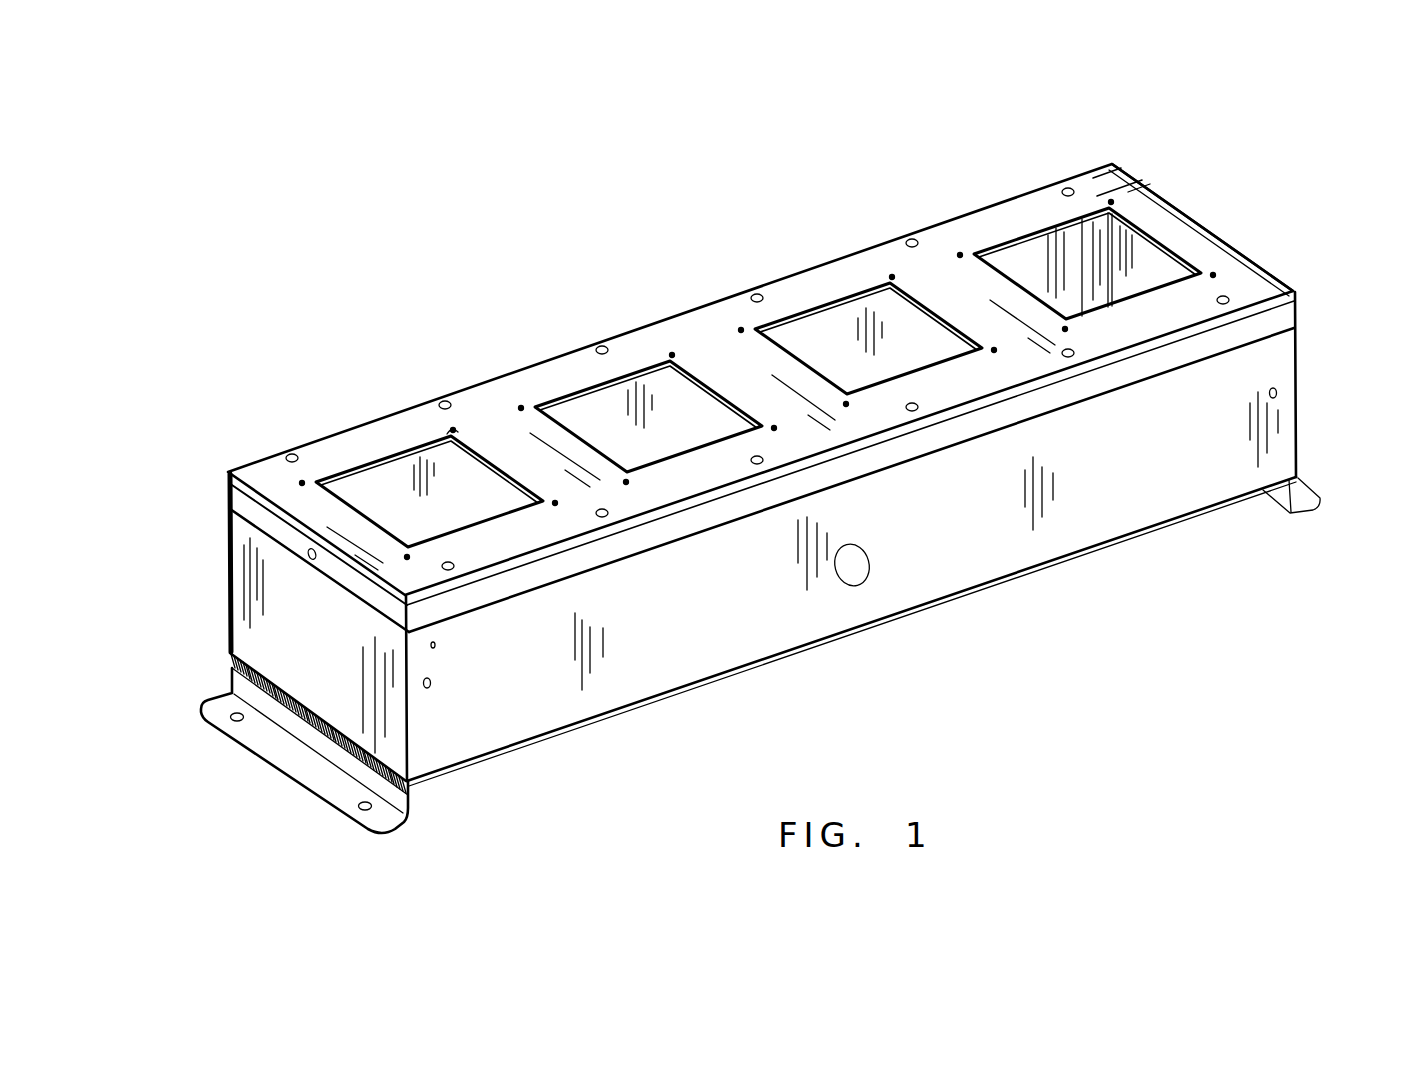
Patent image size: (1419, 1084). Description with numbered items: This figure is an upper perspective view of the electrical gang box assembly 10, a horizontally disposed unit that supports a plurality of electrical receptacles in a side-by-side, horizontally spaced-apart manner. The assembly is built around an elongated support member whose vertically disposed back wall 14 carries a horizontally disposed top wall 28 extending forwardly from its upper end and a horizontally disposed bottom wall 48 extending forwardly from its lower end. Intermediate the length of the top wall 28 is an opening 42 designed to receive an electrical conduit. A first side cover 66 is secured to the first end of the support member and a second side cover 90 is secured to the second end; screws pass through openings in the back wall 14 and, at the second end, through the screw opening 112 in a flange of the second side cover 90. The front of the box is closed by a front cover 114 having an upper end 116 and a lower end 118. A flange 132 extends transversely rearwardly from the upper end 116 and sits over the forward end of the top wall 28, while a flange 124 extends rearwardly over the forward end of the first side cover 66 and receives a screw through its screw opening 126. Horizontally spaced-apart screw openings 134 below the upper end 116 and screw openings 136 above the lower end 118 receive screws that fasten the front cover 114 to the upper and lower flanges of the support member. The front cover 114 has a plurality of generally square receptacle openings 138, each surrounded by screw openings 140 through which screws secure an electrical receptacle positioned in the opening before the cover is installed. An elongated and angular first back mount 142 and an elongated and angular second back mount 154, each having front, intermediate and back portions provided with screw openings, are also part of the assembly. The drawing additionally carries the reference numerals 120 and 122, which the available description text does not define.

The electrical gang box assembly 10 is at (947, 180).
The back wall 14 is at (306, 733).
The top wall 28 is at (1064, 528).
The opening 42 is at (869, 563).
The bottom wall 48 is at (214, 528).
The first side cover 66 is at (255, 596).
The second side cover 90 is at (1157, 258).
The screw opening 112 is at (629, 728).
The front cover 114 is at (782, 262).
The upper end 116 is at (598, 540).
The lower end 118 is at (932, 225).
The top rim 120 is at (268, 492).
The right end portion 122 is at (1258, 265).
The flange 124 is at (368, 597).
The screw opening 126 is at (308, 557).
The flange 132 is at (690, 527).
The screw openings 134 is at (600, 517).
The screw openings 136 is at (594, 350).
The receptacle opening 138 is at (380, 458).
The screw openings 140 is at (453, 430).
The first back mount 142 is at (335, 808).
The second back mount 154 is at (1330, 478).